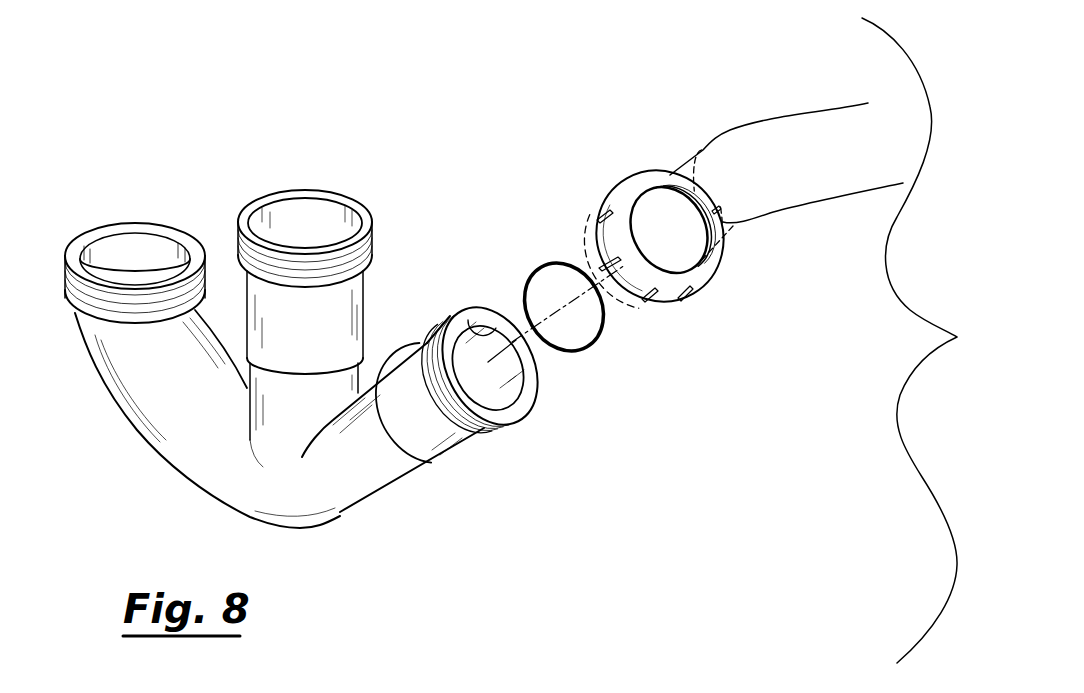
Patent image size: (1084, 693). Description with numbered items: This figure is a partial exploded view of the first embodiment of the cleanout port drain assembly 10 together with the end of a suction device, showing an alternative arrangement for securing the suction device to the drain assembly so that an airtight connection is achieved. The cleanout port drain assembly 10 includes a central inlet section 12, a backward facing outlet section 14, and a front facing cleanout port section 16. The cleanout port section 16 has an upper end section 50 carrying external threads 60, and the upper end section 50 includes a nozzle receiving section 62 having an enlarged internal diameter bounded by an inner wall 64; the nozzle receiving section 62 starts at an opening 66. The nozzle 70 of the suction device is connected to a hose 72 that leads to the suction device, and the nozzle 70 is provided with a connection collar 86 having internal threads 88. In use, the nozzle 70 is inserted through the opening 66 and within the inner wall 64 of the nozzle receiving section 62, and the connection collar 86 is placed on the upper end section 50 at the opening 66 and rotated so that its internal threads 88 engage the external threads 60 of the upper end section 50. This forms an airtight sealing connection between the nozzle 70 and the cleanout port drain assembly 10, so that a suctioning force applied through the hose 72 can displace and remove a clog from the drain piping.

The cleanout port drain assembly 10 is at (236, 470).
The central inlet section 12 is at (358, 290).
The backward facing outlet section 14 is at (98, 350).
The front facing cleanout port section 16 is at (398, 473).
The upper end section 50 is at (476, 435).
The threads 60 is at (428, 346).
The nozzle receiving section 62 is at (442, 440).
The inner wall 64 is at (496, 327).
The opening 66 is at (496, 374).
The nozzle 70 is at (587, 247).
The hose 72 is at (818, 192).
The connection collar 86 is at (696, 286).
The internal threads 88 is at (680, 205).